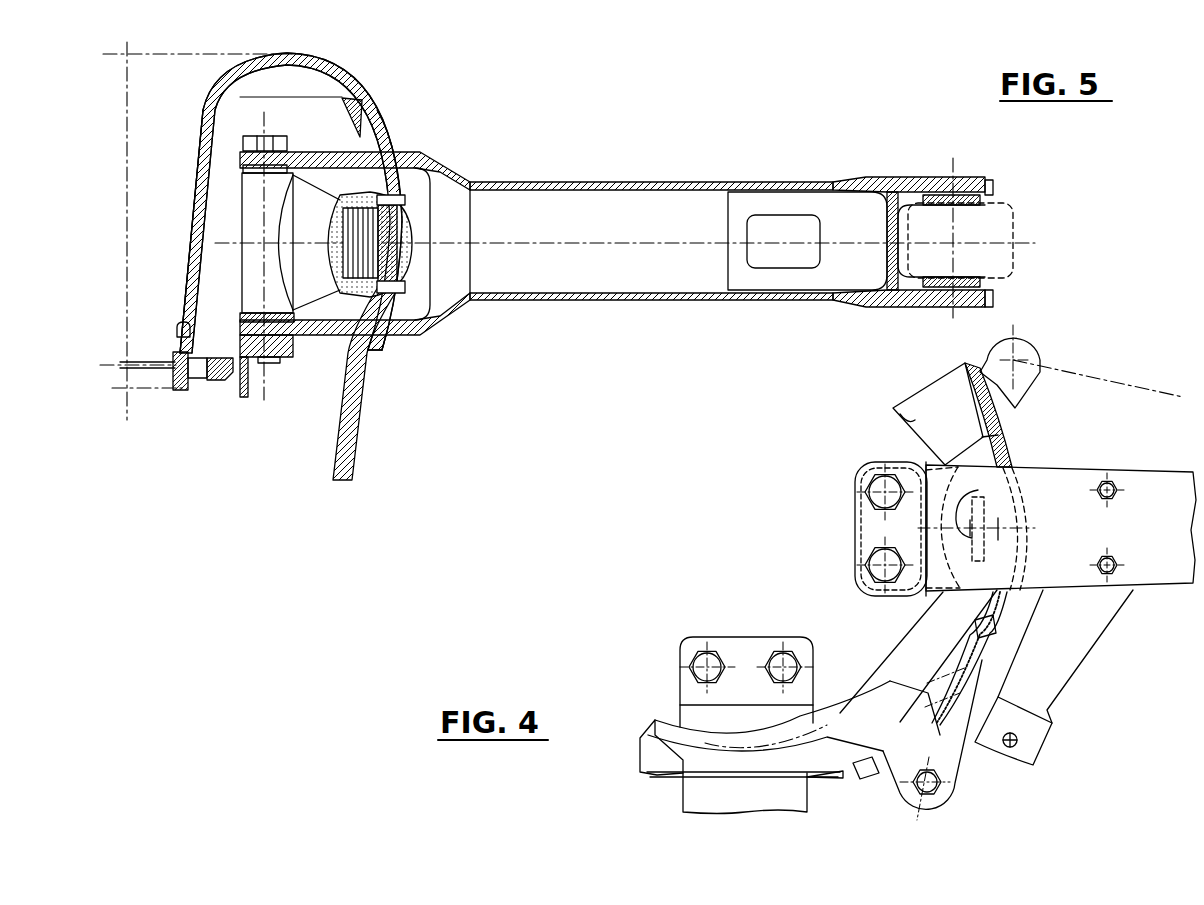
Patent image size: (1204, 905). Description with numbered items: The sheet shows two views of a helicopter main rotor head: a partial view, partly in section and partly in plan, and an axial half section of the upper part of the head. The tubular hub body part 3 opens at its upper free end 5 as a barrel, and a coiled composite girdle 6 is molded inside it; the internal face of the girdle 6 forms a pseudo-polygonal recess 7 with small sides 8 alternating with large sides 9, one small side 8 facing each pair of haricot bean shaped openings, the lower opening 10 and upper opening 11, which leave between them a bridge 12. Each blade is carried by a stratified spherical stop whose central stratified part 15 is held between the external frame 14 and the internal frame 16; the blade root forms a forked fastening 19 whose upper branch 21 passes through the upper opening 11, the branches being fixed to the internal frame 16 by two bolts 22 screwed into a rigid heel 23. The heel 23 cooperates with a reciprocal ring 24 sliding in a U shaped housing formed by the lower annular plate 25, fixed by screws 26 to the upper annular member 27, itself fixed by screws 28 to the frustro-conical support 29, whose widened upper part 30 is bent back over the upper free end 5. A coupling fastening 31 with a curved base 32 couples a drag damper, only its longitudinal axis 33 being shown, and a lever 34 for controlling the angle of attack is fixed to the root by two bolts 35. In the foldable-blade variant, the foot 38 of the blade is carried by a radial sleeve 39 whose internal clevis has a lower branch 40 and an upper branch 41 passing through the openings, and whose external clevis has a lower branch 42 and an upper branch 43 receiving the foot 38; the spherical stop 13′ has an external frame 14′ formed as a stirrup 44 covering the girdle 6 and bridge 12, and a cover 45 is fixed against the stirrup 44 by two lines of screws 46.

In FIG. 5, the hub body part 3 is at (358, 443).
In FIG. 4, the hub body part 3 is at (880, 720).
In FIG. 5, the upper free end 5 is at (366, 104).
In FIG. 4, the upper free end 5 is at (698, 735).
In FIG. 5, the girdle 6 is at (385, 282).
In FIG. 4, the girdle 6 is at (908, 413).
In FIG. 4, the recess 7 is at (834, 459).
In FIG. 4, the small sides 8 is at (987, 478).
In FIG. 4, the large sides 9 is at (891, 648).
In FIG. 5, the lower opening 10 is at (383, 345).
In FIG. 5, the upper opening 11 is at (382, 143).
In FIG. 4, the upper opening 11 is at (1005, 440).
In FIG. 5, the bridge 12 is at (390, 222).
In FIG. 4, the bridge 12 is at (840, 777).
In FIG. 5, the spherical stop 13′ is at (322, 306).
In FIG. 4, the external radial frame 14 is at (960, 550).
In FIG. 5, the external frame 14′ is at (323, 227).
In FIG. 5, the central stratified part 15 is at (285, 257).
In FIG. 4, the central stratified part 15 is at (918, 580).
In FIG. 5, the internal frame 16 is at (250, 192).
In FIG. 4, the internal frame 16 is at (868, 527).
In FIG. 4, the forked fastening 19 is at (1157, 490).
In FIG. 4, the upper branch 21 is at (1068, 478).
In FIG. 5, the bolts 22 is at (260, 138).
In FIG. 4, the bolts 22 is at (775, 658).
In FIG. 5, the rigid heel 23 is at (252, 356).
In FIG. 5, the reciprocal ring 24 is at (222, 378).
In FIG. 5, the lower annular plate 25 is at (197, 383).
In FIG. 5, the screws 26 is at (183, 392).
In FIG. 5, the upper annular member 27 is at (175, 352).
In FIG. 5, the screws 28 is at (176, 328).
In FIG. 5, the frustro-conical support 29 is at (204, 147).
In FIG. 5, the upper part 30 is at (322, 57).
In FIG. 4, the coupling fastening 31 is at (1030, 357).
In FIG. 4, the curved base 32 is at (977, 653).
In FIG. 4, the longitudinal axes 33 is at (1112, 378).
In FIG. 4, the lever 34 is at (1093, 628).
In FIG. 4, the bolts 35 is at (1113, 557).
In FIG. 5, the foot of blade 38 is at (1005, 212).
In FIG. 5, the radial sleeve 39 is at (747, 297).
In FIG. 5, the lower branch 40 is at (437, 326).
In FIG. 5, the upper branch 41 is at (443, 162).
In FIG. 5, the lower branch 42 is at (915, 307).
In FIG. 5, the upper branch 43 is at (928, 190).
In FIG. 5, the stirrup 44 is at (360, 287).
In FIG. 5, the cover 45 is at (403, 233).
In FIG. 5, the screws 46 is at (405, 292).